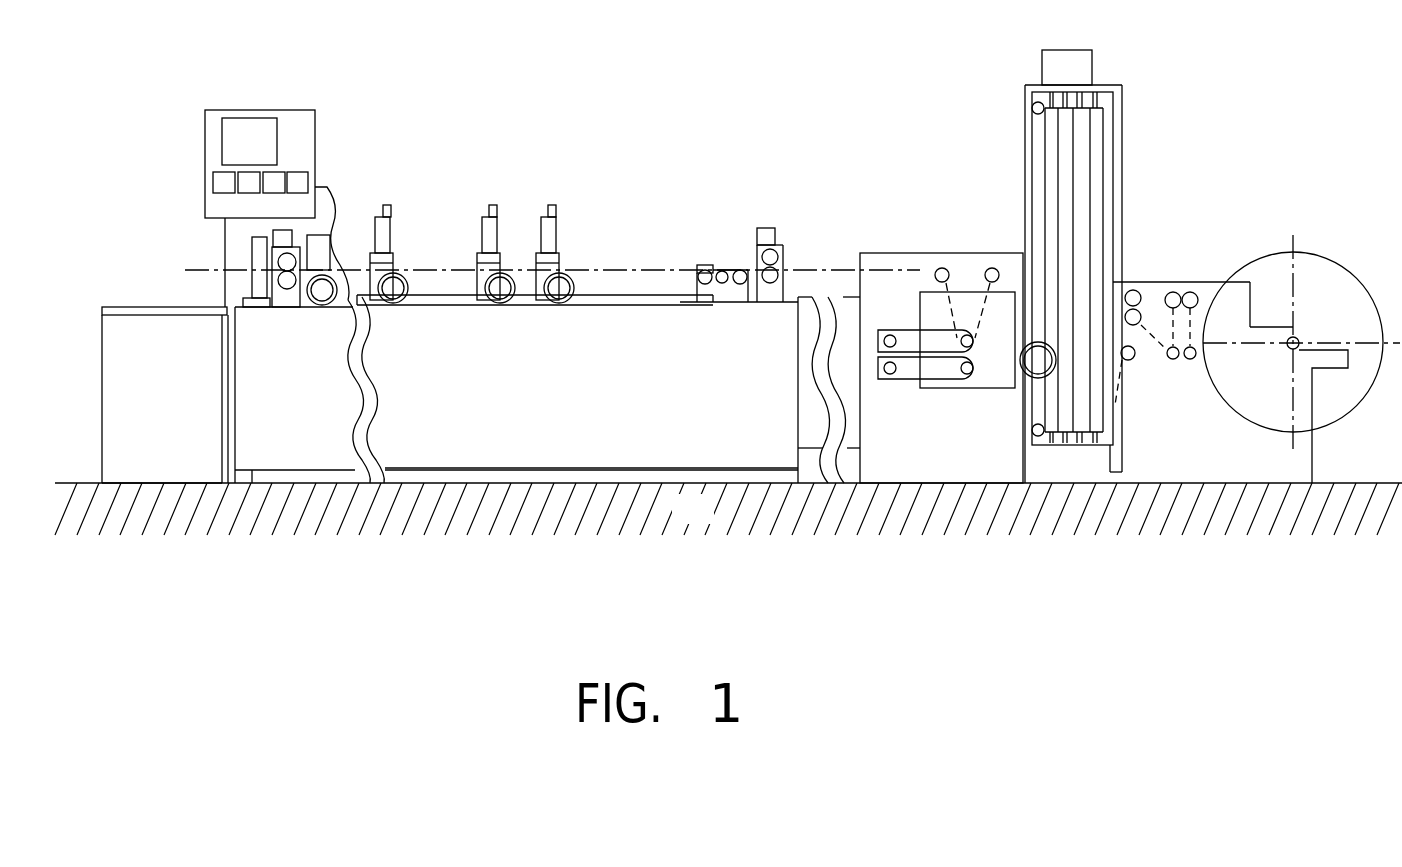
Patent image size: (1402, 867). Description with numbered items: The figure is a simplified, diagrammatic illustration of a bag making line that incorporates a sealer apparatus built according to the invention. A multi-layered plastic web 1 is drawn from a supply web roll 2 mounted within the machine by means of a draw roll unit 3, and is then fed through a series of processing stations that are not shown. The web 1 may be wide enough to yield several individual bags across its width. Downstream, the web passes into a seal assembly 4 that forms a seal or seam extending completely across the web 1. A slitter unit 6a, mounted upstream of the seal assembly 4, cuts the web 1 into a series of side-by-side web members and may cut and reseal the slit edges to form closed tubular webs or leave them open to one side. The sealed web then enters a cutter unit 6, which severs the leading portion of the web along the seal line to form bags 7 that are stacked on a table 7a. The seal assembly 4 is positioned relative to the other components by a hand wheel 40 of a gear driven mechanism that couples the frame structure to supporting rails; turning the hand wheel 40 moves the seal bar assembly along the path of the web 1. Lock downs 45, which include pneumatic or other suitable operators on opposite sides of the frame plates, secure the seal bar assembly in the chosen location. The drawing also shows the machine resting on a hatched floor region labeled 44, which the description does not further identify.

The multi-layered plastic web 1 is at (187, 272).
The web roll 2 is at (1327, 254).
The draw roll unit 3 is at (787, 230).
The seal assembly 4 is at (488, 205).
The cutter unit 6 is at (290, 312).
The slitter unit 6a is at (1017, 122).
The bags 7 is at (147, 307).
The table 7a is at (155, 317).
The hand wheel 40 is at (501, 306).
The floor 44 is at (612, 482).
The lock downs 45 is at (709, 521).